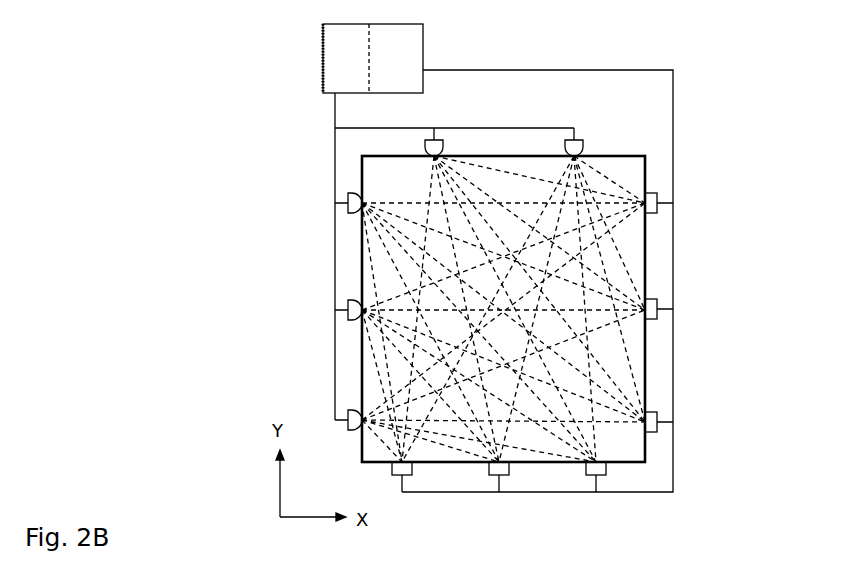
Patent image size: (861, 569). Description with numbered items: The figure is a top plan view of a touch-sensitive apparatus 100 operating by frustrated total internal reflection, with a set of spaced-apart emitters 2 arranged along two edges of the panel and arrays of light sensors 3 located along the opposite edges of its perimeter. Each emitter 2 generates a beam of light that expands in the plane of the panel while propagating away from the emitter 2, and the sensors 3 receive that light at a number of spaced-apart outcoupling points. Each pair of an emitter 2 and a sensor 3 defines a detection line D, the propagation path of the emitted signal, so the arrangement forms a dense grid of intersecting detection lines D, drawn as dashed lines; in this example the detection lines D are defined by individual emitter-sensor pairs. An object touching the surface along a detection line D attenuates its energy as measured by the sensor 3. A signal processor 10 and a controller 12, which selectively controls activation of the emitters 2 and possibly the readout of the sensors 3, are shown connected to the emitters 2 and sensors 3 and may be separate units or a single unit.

The touch-sensitive apparatus 100 is at (728, 79).
The signal processor 10 is at (414, 28).
The controller 12 is at (323, 40).
The emitter 2 is at (437, 139).
The sensor 3 is at (658, 421).
The detection line D is at (616, 212).